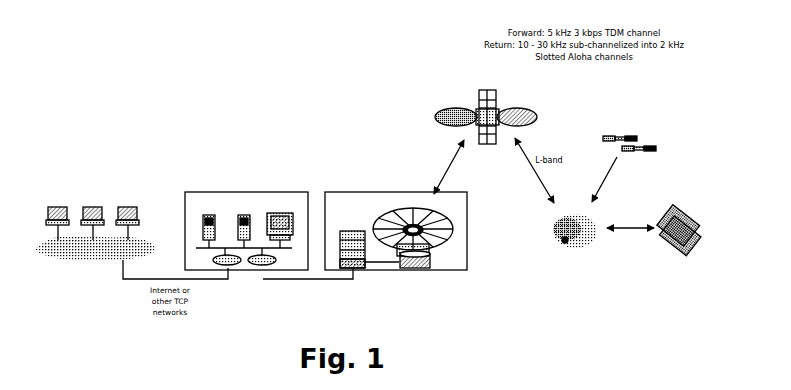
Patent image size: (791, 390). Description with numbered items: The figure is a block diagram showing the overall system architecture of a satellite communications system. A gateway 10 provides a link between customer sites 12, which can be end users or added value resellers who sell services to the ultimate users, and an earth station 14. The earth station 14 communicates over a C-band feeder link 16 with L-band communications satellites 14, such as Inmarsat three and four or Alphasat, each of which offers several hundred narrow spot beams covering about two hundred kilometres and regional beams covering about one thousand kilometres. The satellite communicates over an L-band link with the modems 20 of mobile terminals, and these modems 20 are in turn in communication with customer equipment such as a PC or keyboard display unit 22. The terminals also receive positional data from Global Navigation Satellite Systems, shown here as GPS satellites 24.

The gateway 10 is at (257, 268).
The customer sites 12 is at (113, 160).
The earth station and L-band communications satellites 14 is at (438, 268).
The C-band feeder link 16 is at (441, 170).
The modems 20 is at (588, 222).
The PC or keyboard display unit 22 is at (700, 247).
The GPS satellites 24 is at (648, 137).